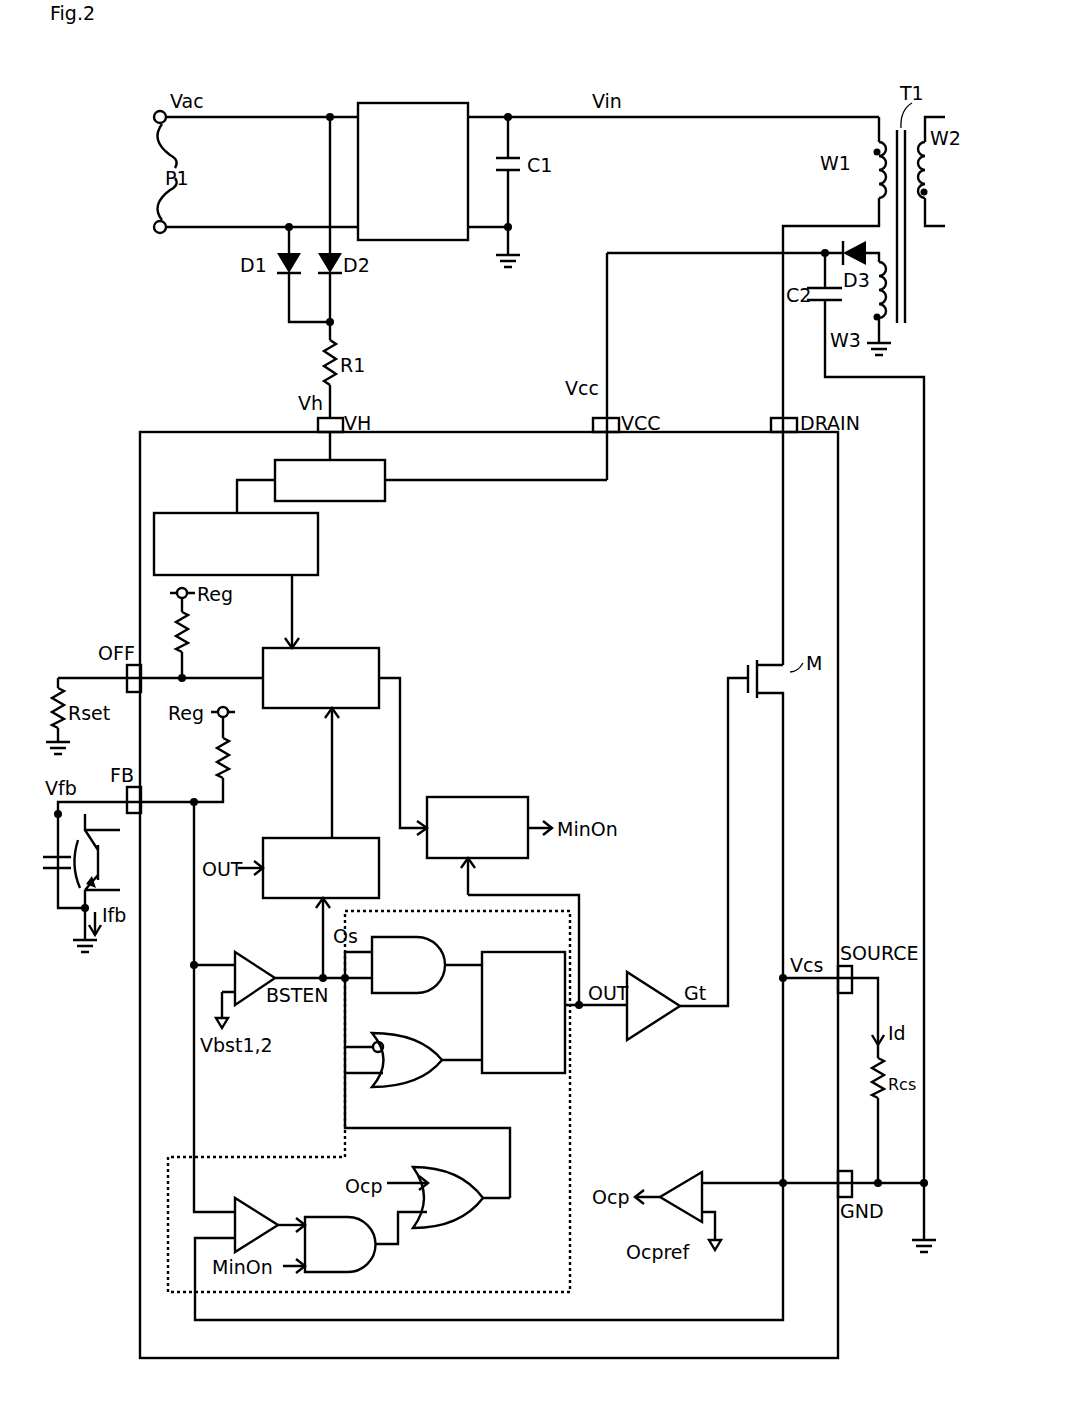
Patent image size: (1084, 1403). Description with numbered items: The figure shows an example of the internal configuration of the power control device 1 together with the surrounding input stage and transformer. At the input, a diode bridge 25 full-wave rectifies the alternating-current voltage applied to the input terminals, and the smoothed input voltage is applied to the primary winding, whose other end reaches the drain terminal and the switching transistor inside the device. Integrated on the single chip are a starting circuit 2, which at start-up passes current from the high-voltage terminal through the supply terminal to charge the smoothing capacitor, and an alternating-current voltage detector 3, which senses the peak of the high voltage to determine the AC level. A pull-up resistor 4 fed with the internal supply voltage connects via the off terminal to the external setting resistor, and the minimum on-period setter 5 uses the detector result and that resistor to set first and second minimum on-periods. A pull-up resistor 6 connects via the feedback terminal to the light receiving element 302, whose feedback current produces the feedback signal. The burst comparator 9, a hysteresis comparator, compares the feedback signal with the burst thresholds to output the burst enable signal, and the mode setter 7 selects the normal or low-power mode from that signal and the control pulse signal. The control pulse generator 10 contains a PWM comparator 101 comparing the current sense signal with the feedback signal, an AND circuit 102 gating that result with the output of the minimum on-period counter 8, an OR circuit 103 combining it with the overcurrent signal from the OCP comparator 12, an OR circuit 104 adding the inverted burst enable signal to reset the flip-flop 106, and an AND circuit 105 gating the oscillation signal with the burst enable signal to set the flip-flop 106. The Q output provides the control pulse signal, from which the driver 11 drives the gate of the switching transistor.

The power control device 1 is at (172, 432).
The starting circuit 2 is at (385, 474).
The alternating-current voltage detector 3 is at (318, 525).
The pull-up resistor 4 is at (190, 645).
The minimum on-period setter 5 is at (371, 648).
The pull-up resistor 6 is at (231, 768).
The mode setter 7 is at (362, 838).
The minimum on-period counter 8 is at (515, 797).
The burst comparator 9 is at (245, 952).
The control pulse generator 10 is at (575, 1290).
The driver 11 is at (638, 972).
The OCP comparator 12 is at (680, 1180).
The diode bridge 25 is at (463, 103).
The PWM comparator 101 is at (245, 1198).
The AND circuit 102 is at (370, 1270).
The OR circuit 103 is at (440, 1172).
The OR circuit 104 is at (408, 1035).
The AND circuit 105 is at (425, 937).
The flip-flop 106 is at (560, 938).
The light receiving element 302 is at (108, 828).